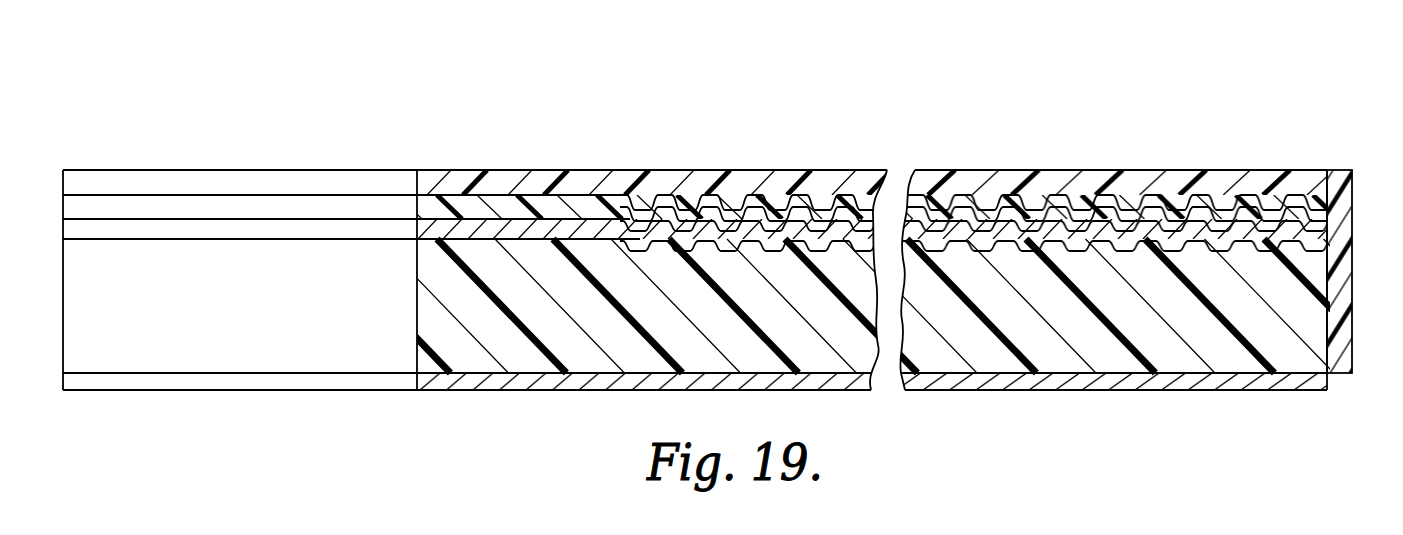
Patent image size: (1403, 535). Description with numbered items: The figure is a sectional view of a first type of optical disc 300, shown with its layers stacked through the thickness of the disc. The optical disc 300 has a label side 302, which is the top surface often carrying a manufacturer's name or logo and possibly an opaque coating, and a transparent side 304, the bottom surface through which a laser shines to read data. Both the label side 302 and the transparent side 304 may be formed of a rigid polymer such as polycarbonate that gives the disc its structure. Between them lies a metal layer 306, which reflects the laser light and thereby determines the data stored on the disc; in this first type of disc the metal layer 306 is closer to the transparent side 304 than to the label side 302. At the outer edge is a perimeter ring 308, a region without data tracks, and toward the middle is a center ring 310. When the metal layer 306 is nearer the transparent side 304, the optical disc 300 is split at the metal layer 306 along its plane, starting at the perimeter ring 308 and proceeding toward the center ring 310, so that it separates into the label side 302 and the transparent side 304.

The optical disc 300 is at (733, 244).
The label side 302 is at (1109, 413).
The transparent side 304 is at (648, 143).
The metal layer 306 is at (992, 195).
The perimeter ring 308 is at (1339, 145).
The center ring 310 is at (256, 133).